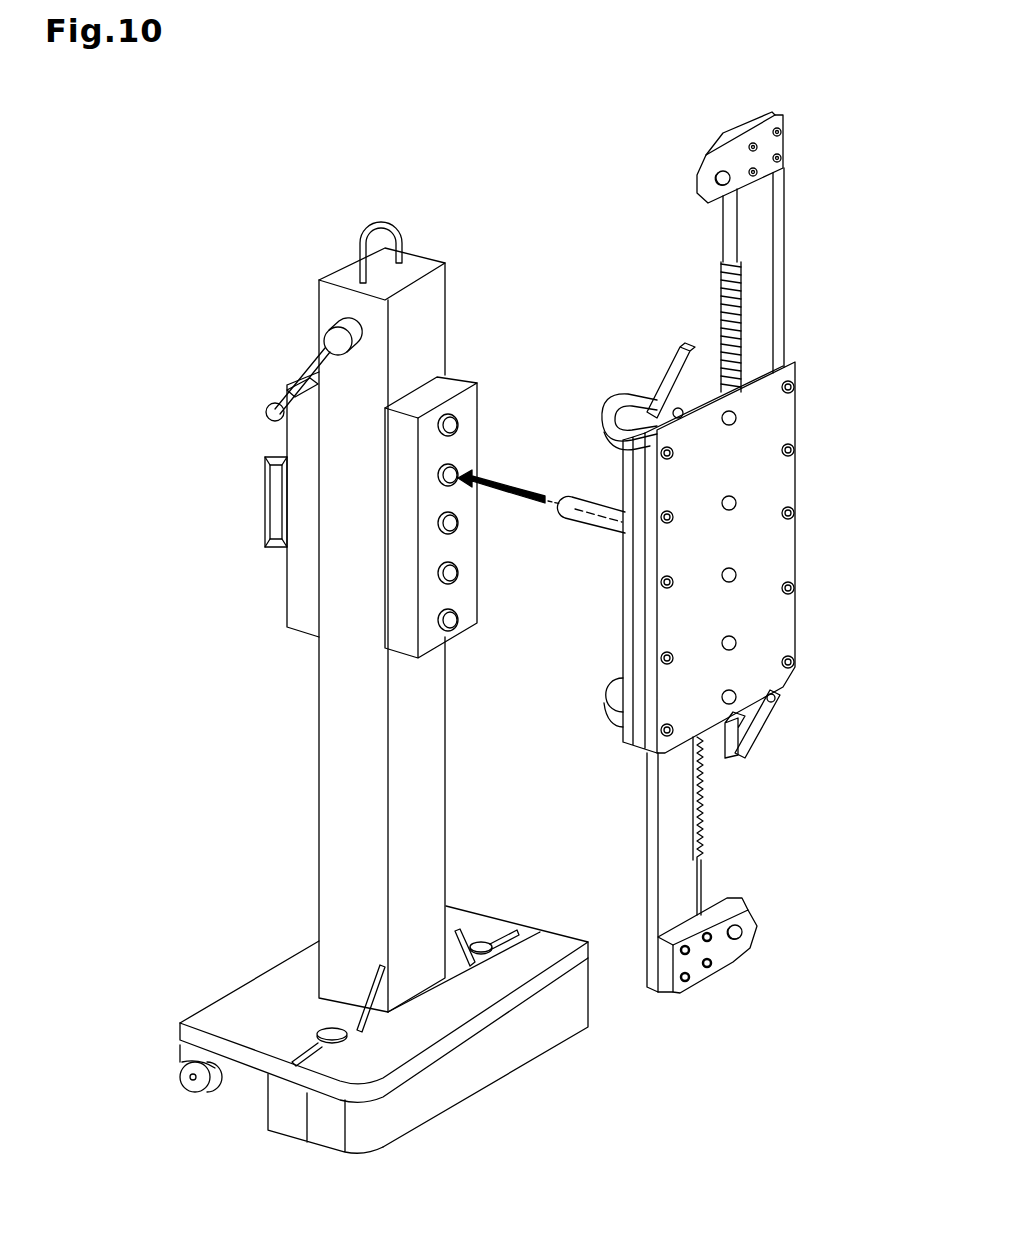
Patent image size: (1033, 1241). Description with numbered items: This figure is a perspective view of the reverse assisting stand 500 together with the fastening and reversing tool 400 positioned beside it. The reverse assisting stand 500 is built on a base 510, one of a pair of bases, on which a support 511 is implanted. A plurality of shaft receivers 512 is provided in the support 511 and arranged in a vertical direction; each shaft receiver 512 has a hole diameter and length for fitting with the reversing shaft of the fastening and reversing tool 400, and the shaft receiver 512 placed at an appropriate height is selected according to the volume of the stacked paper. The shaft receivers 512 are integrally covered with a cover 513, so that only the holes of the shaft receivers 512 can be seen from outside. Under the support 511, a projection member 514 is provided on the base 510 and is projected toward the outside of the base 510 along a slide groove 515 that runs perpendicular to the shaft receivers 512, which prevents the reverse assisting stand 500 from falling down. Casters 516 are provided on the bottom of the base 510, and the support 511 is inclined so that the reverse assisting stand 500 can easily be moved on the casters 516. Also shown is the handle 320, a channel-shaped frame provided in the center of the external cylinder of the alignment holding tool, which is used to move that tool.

The fastening and reversing tool 400 is at (690, 227).
The reverse assisting stand 500 is at (240, 540).
The base 510 is at (498, 983).
The support 511 is at (350, 823).
The shaft receivers 512 is at (452, 473).
The cover 513 is at (437, 393).
The projection member 514 is at (288, 1112).
The slide groove 515 is at (330, 1058).
The casters 516 is at (187, 1093).
The handle 320 is at (267, 500).